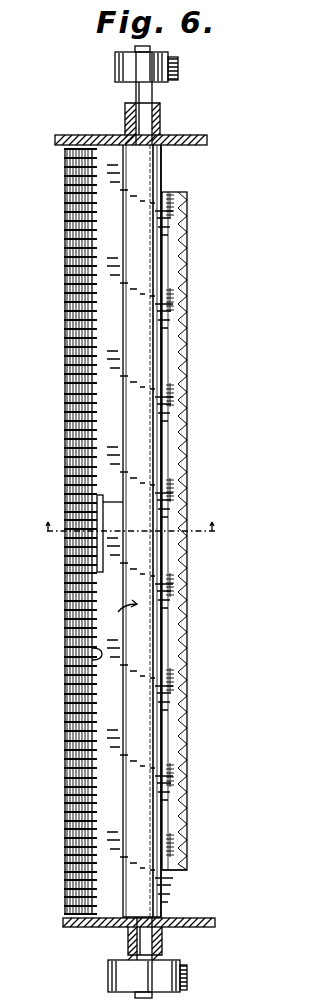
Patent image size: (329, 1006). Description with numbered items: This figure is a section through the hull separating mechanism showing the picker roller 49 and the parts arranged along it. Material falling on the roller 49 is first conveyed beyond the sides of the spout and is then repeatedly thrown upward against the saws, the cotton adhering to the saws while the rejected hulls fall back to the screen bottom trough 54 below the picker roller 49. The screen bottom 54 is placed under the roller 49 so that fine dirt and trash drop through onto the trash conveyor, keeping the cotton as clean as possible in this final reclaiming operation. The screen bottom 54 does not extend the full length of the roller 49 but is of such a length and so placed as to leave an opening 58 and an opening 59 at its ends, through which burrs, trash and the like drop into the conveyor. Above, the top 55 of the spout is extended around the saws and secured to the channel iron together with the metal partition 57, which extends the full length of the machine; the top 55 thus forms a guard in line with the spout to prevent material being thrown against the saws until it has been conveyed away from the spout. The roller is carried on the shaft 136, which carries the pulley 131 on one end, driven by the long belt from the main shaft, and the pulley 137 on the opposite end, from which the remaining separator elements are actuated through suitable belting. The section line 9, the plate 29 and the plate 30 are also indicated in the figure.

The pulley 137 is at (130, 68).
The upper frame plate 29 is at (193, 128).
The opening 59 is at (173, 172).
The picker roller 49 is at (147, 458).
The screen bottom trough 54 is at (173, 373).
The top of the spout 55 is at (98, 560).
The metal partition 57 is at (117, 502).
The section line 9- 9 is at (131, 518).
The opening 58 is at (177, 882).
The lower frame plate 30 is at (189, 930).
The shaft 136 is at (137, 937).
The pulley 131 is at (120, 972).